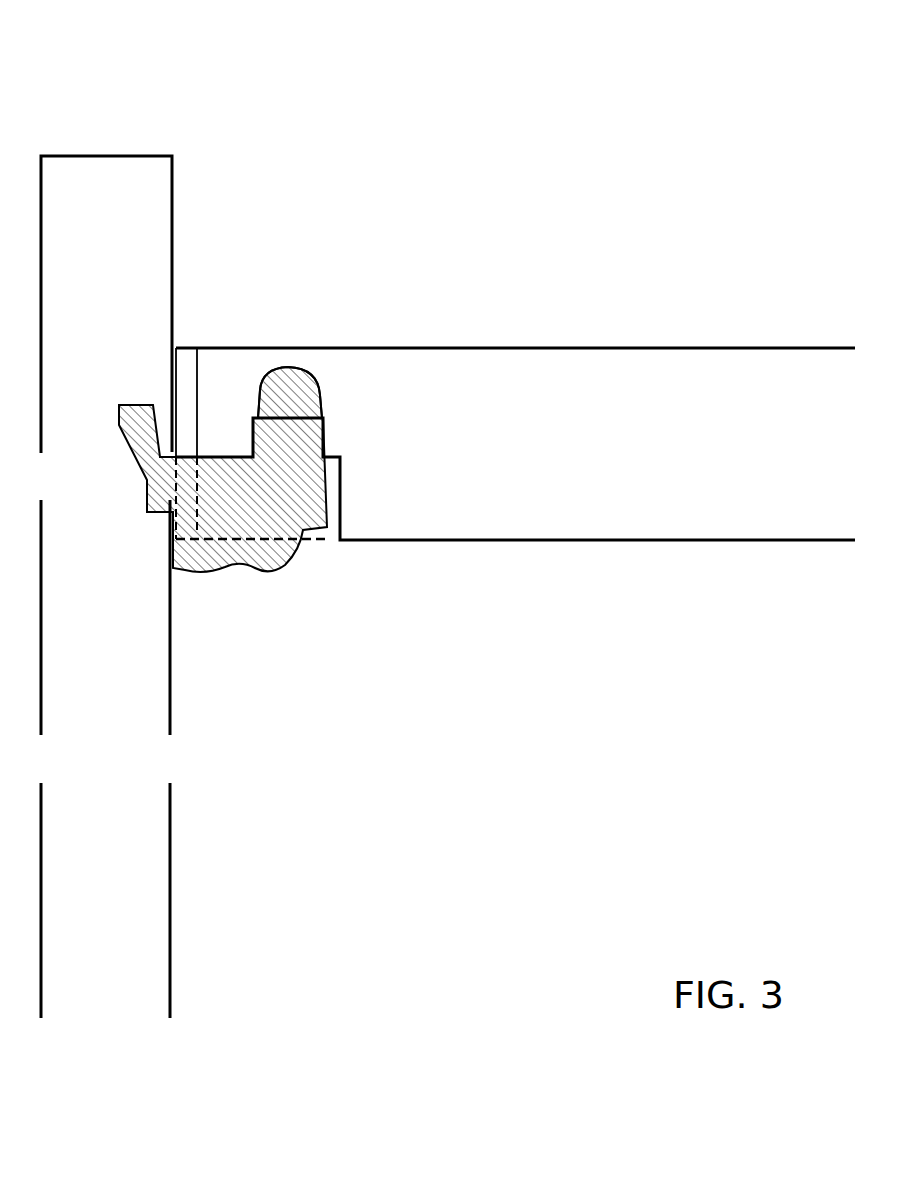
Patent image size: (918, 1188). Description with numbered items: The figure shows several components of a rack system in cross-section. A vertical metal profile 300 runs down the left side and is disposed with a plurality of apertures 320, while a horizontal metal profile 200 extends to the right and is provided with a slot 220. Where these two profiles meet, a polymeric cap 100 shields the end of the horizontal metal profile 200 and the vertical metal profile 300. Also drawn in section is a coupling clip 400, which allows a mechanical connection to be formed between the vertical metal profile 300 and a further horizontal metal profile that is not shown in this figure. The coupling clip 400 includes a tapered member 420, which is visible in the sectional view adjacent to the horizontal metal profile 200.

The polymeric cap 100 is at (188, 355).
The horizontal metal profile 200 is at (659, 379).
The slot 220 is at (307, 541).
The vertical metal profile 300 is at (118, 170).
The apertures 320 is at (172, 755).
The coupling clip 400 is at (262, 573).
The tapered member 420 is at (313, 385).